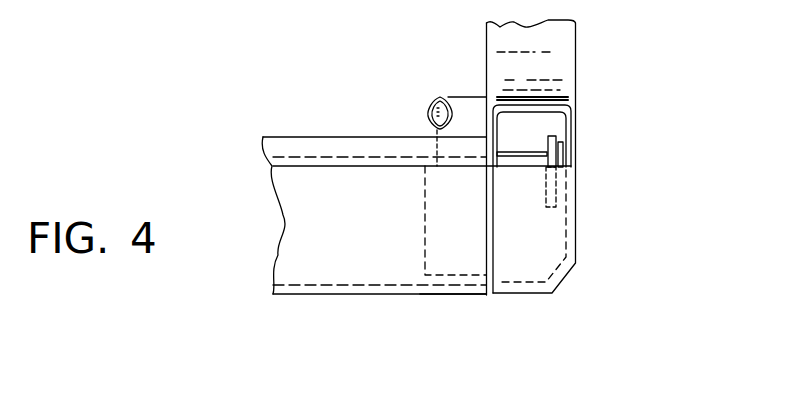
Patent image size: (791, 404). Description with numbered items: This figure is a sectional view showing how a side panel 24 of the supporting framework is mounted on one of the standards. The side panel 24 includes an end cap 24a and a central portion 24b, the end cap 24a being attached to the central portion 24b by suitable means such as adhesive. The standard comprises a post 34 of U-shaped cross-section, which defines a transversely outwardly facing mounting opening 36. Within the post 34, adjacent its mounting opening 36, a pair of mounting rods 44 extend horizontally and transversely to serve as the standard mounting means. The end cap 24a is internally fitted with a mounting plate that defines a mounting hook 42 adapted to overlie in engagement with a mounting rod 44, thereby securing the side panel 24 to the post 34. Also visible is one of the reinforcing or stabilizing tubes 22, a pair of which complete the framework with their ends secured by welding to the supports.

The reinforcing or stabilizing tube 22 is at (455, 97).
The side panel 24 is at (296, 136).
The end cap 24a is at (577, 265).
The central portion 24b is at (384, 320).
The post 34 is at (575, 154).
The mounting opening 36 is at (503, 158).
The mounting hook 42 is at (550, 137).
The mounting rod 44 is at (503, 157).